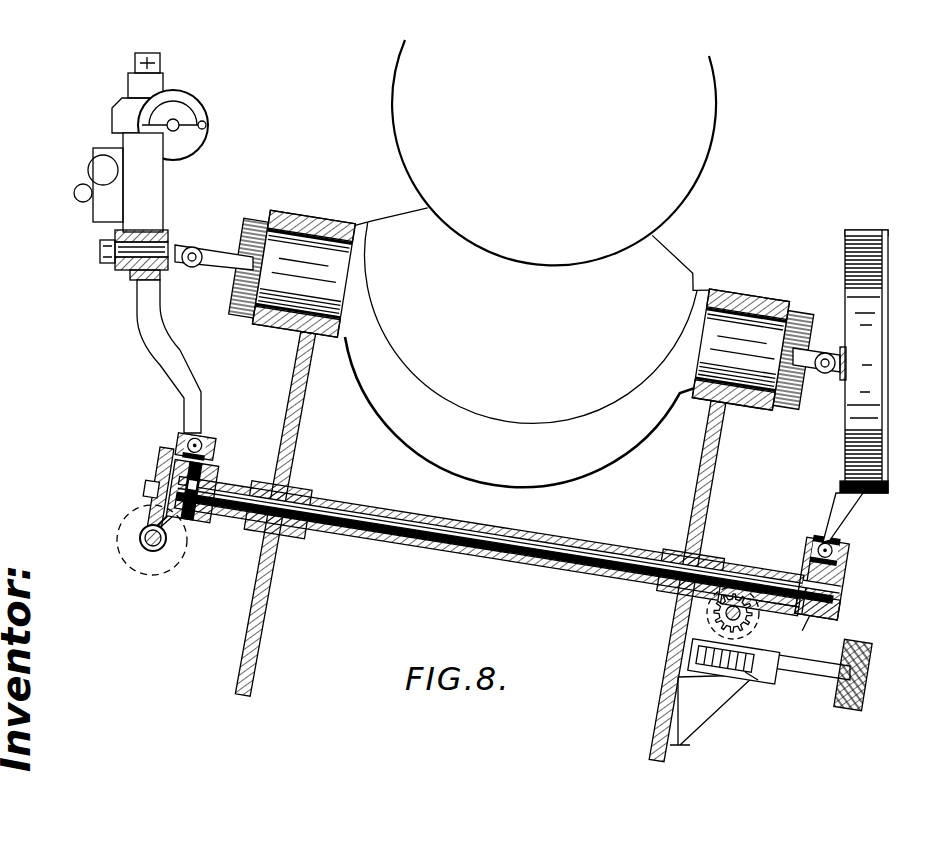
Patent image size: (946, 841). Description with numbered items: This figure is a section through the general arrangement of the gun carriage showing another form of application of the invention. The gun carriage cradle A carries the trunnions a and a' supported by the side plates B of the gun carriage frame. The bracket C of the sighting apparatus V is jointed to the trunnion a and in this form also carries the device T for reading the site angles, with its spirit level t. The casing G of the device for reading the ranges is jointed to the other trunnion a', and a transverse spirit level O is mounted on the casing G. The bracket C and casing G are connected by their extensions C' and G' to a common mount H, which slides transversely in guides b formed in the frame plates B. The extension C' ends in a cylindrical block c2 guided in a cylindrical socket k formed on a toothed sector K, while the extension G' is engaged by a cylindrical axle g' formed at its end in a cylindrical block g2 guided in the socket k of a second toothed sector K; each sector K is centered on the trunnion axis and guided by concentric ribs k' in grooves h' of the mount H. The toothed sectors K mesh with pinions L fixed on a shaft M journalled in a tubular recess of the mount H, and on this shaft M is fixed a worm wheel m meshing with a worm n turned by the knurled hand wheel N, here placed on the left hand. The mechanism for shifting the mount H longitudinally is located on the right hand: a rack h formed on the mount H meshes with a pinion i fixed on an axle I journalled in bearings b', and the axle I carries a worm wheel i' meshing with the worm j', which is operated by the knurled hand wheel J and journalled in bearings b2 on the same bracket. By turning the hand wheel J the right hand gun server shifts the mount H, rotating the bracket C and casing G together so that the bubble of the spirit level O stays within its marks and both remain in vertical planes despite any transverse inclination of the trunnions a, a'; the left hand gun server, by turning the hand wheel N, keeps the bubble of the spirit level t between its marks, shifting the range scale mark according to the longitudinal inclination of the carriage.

The sighting apparatus V is at (118, 118).
The spirit level t is at (74, 192).
The device for reading the site angles T is at (97, 213).
The bracket of the sighting apparatus C is at (146, 206).
The trunnion a is at (292, 260).
The trunnion a' is at (753, 337).
The extension C' is at (189, 359).
The cylindrical block c2 is at (190, 441).
The cylindrical socket k is at (526, 497).
The toothed sector K is at (160, 468).
The side plates B is at (293, 451).
The guides b is at (294, 503).
The worm wheel m is at (138, 512).
The knurled hand wheel N is at (115, 546).
The pinion L is at (187, 523).
The worm n is at (146, 553).
The gun carriage cradle A is at (440, 455).
The shaft M is at (484, 541).
The mount H is at (441, 551).
The transverse spirit level O is at (853, 232).
The casing G is at (856, 361).
The extension G' is at (827, 502).
The cylindrical block g2 is at (817, 543).
The cylindrical axle g' is at (849, 555).
The concentric ribs k' is at (842, 580).
The grooves h' is at (835, 605).
The pinion i is at (698, 613).
The worm wheel i' is at (697, 626).
The axle I is at (754, 618).
The rack h is at (766, 626).
The knurled hand wheel J is at (868, 657).
The bearings b' is at (760, 698).
The worm j' is at (734, 685).
The bearings b2 is at (758, 680).